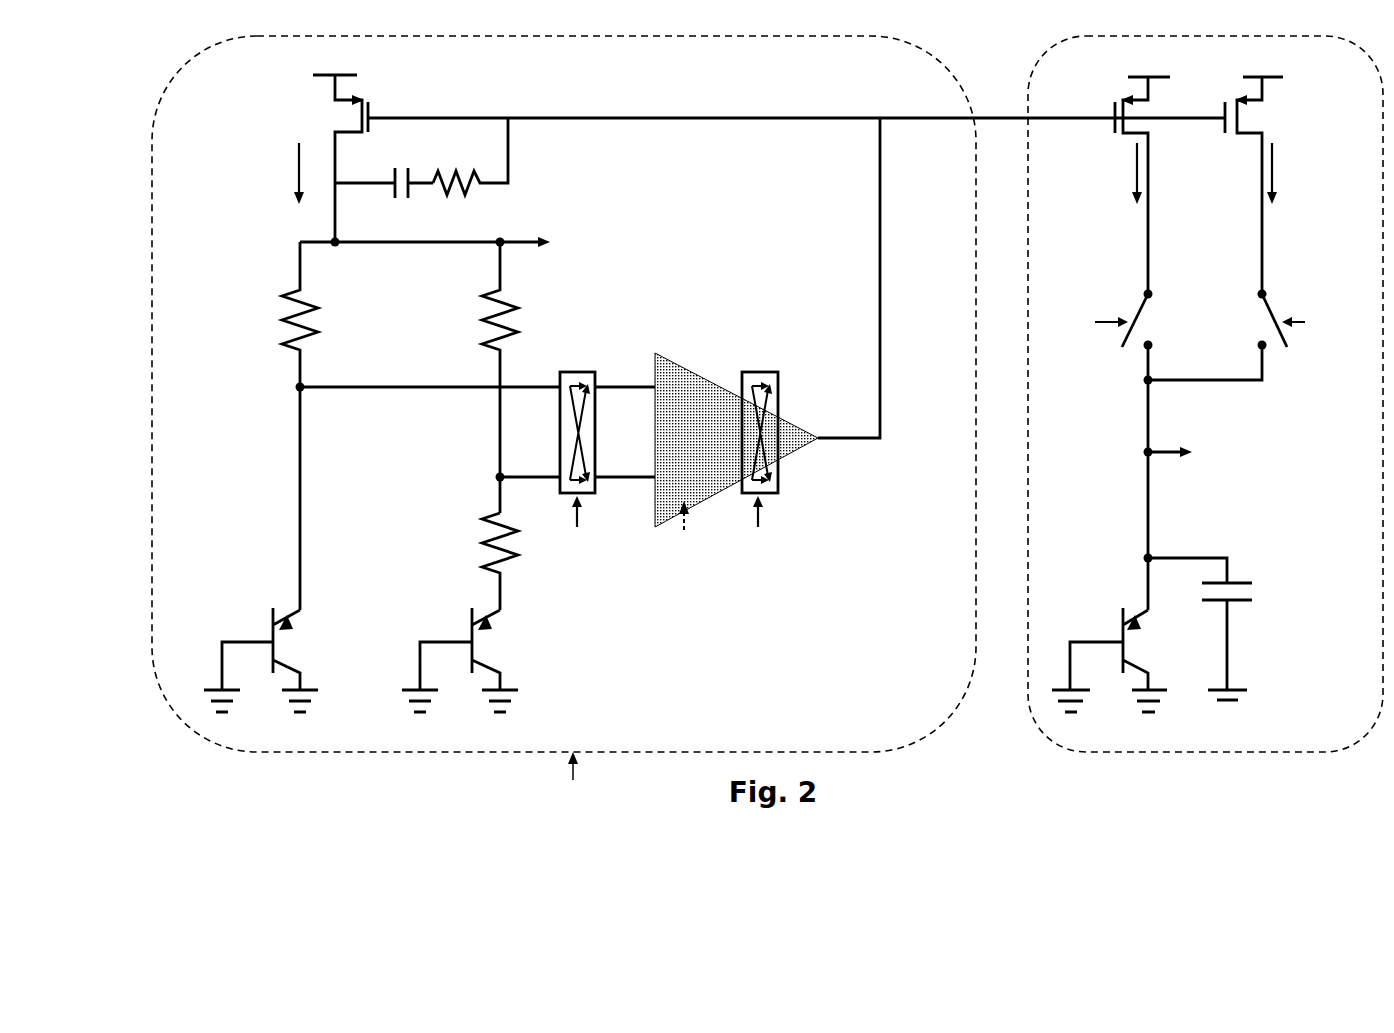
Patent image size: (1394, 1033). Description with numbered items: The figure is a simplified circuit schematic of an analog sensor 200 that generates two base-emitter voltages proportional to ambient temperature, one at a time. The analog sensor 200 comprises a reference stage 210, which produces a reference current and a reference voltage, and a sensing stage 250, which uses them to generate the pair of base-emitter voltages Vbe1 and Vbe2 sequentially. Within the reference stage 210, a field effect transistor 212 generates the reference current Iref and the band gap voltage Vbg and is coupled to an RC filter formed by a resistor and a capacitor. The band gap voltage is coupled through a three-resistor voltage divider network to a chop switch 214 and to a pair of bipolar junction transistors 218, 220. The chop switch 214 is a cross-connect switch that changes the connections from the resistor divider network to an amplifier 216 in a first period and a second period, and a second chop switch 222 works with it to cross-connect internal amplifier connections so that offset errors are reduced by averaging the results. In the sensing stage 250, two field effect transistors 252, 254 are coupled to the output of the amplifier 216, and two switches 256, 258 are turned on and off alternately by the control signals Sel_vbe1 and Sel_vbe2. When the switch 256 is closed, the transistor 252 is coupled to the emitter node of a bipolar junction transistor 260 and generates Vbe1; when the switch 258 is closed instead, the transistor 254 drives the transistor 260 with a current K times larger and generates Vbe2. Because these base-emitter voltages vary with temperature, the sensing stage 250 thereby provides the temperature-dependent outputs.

The analog sensor 200 is at (767, 443).
The reference stage 210 is at (748, 697).
The field effect transistor 212 is at (380, 103).
The chop switch 214 is at (558, 363).
The amplifier 216 is at (648, 351).
The bipolar junction transistor 218 is at (308, 643).
The bipolar junction transistor 220 is at (508, 643).
The second chop switch 222 is at (740, 363).
The sensing stage 250 is at (1286, 523).
The field effect transistor 252 is at (1070, 97).
The field effect transistor 254 is at (1286, 97).
The switch 256 is at (1086, 379).
The switch 258 is at (1286, 379).
The bipolar junction transistor 260 is at (1154, 643).